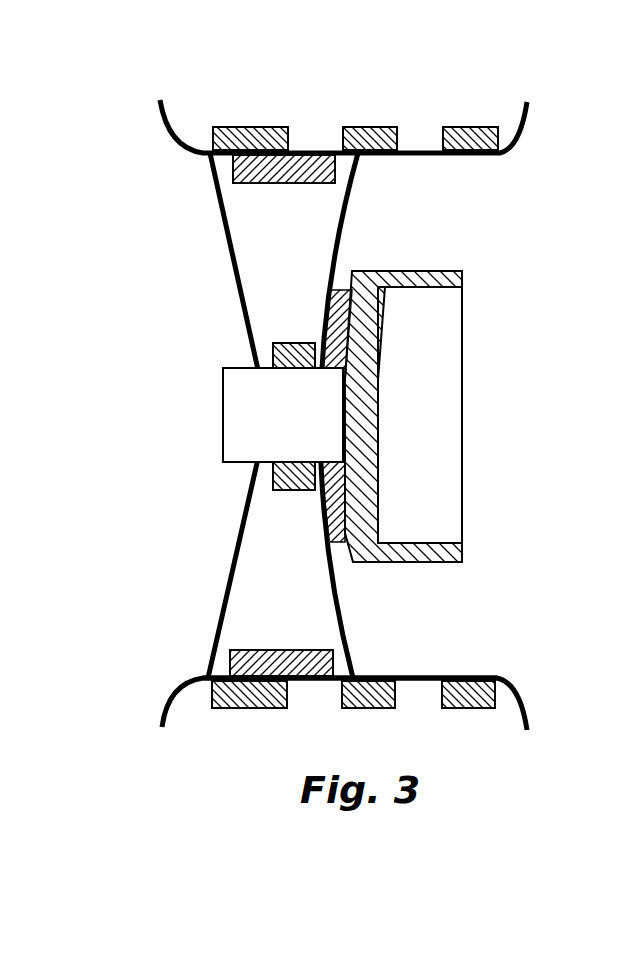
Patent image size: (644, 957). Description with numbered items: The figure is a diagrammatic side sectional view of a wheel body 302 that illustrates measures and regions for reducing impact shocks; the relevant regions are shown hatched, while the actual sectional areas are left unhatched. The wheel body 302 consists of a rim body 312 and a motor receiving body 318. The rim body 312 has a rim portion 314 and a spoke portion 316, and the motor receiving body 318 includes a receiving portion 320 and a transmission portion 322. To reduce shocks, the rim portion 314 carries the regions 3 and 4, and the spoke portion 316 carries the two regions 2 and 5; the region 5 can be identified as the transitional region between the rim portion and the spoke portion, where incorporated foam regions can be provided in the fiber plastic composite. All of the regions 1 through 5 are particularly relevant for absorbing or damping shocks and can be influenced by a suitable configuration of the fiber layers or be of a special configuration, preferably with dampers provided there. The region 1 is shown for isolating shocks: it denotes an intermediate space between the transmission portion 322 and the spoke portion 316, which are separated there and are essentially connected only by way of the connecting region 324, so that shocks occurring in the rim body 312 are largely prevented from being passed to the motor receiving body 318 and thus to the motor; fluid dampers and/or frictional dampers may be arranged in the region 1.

The region 1 is at (335, 287).
The region 2 is at (300, 343).
The region 3 is at (268, 130).
The region 4 is at (380, 130).
The region 5 is at (266, 184).
The wheel body 302 is at (152, 293).
The rim body 312 is at (122, 676).
The rim portion 314 is at (407, 697).
The spoke portion 316 is at (317, 592).
The motor receiving body 318 is at (512, 333).
The receiving portion 320 is at (449, 554).
The transmission portion 322 is at (367, 498).
The connecting region 324 is at (360, 383).